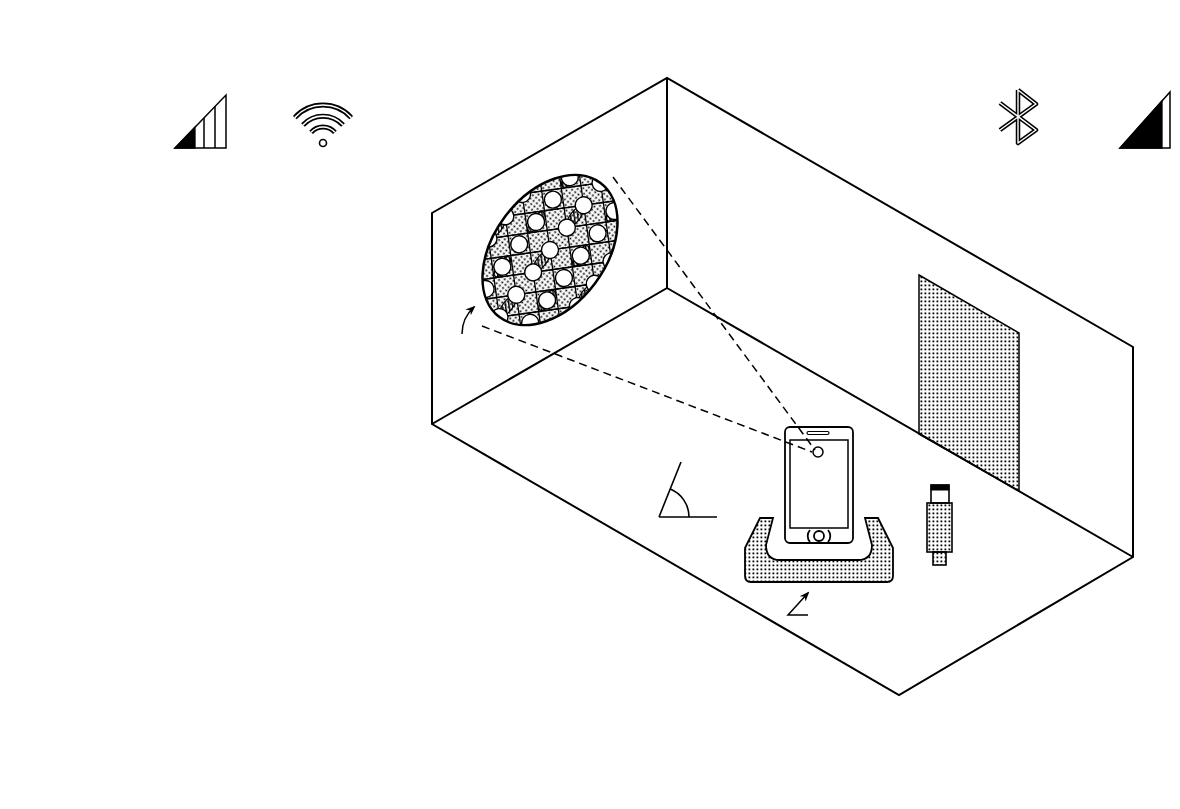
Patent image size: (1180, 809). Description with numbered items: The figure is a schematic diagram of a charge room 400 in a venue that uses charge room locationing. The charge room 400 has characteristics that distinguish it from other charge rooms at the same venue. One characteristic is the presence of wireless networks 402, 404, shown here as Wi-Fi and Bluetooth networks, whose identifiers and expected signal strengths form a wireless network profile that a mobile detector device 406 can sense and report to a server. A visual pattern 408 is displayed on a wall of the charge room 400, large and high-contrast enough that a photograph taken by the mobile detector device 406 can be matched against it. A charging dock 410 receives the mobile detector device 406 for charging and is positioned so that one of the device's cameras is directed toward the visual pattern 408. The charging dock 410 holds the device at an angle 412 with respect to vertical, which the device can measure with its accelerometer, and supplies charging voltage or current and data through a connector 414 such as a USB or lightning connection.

The charge room 400 is at (401, 43).
The wireless network 402 is at (347, 111).
The wireless network 404 is at (1013, 95).
The mobile detector device 406 is at (785, 486).
The visual pattern 408 is at (507, 227).
The charging dock 410 is at (747, 553).
The viewing angle 412 is at (672, 486).
The connector 414 is at (953, 527).